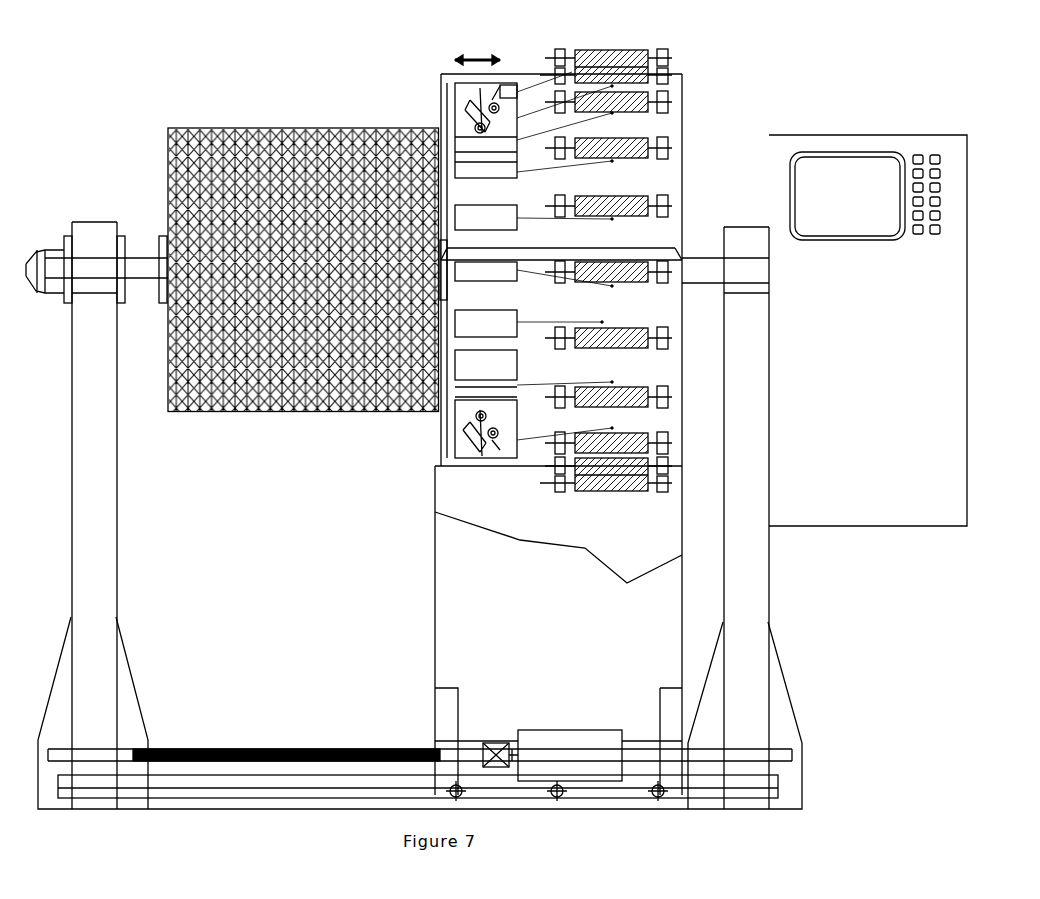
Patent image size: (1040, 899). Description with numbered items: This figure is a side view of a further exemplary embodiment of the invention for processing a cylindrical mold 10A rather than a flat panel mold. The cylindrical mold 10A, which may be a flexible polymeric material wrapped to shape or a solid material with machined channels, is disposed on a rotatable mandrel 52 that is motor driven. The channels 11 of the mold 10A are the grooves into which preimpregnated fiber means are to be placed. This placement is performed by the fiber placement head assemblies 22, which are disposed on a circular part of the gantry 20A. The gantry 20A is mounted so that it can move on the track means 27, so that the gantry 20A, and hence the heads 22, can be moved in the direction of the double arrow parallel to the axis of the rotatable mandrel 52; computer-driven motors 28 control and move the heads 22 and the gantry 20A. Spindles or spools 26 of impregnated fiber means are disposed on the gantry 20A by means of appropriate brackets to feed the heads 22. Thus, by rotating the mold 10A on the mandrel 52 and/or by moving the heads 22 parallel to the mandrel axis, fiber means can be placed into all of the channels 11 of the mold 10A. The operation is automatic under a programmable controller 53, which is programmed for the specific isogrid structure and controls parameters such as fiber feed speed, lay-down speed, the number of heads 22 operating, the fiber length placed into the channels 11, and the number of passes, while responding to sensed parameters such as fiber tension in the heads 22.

The cylindrical mold 10A is at (301, 128).
The channels 11 is at (237, 128).
The rotatable mandrel 52 is at (148, 268).
The controller 53 is at (948, 265).
The spools 26 is at (625, 54).
The fiber placement head assemblies 22 is at (489, 458).
The gantry 20A is at (457, 663).
The motors 28 is at (574, 730).
The track means 27 is at (778, 750).